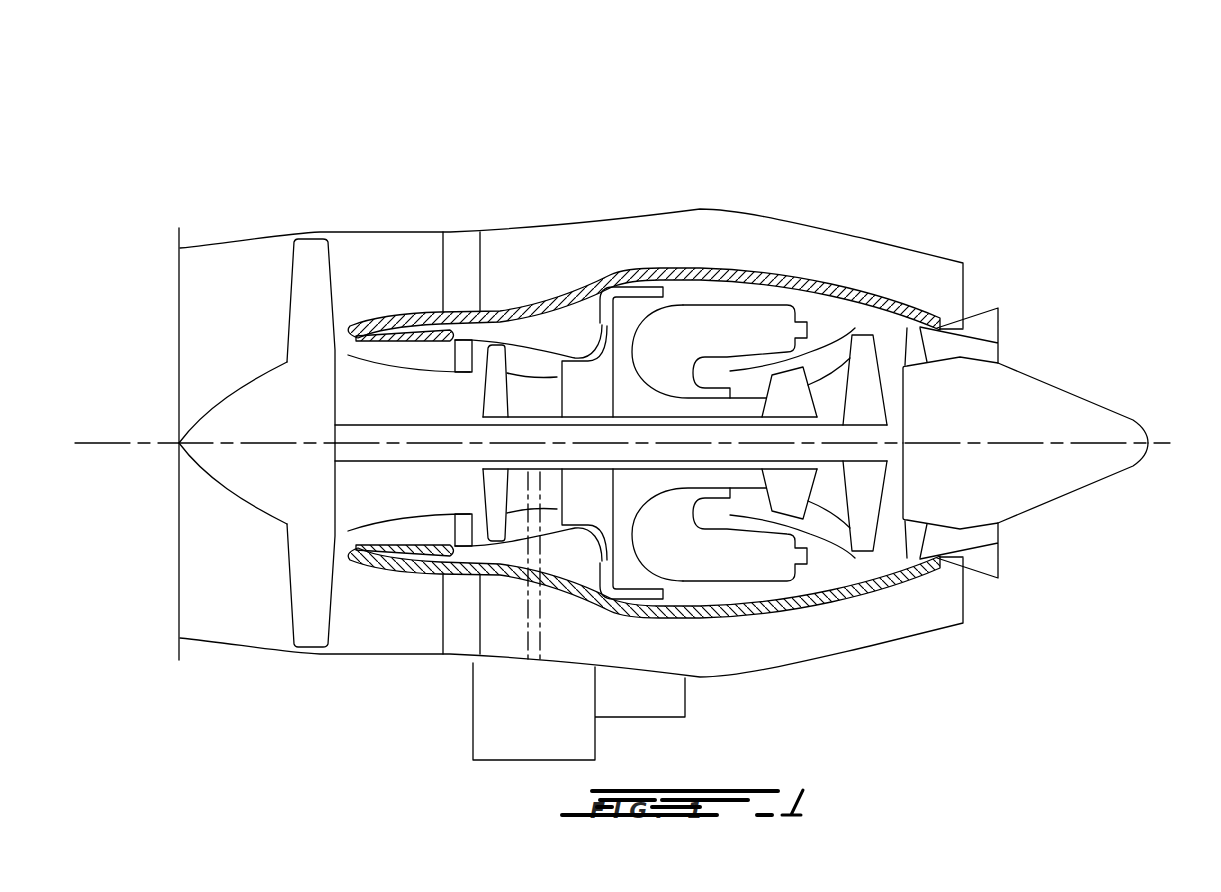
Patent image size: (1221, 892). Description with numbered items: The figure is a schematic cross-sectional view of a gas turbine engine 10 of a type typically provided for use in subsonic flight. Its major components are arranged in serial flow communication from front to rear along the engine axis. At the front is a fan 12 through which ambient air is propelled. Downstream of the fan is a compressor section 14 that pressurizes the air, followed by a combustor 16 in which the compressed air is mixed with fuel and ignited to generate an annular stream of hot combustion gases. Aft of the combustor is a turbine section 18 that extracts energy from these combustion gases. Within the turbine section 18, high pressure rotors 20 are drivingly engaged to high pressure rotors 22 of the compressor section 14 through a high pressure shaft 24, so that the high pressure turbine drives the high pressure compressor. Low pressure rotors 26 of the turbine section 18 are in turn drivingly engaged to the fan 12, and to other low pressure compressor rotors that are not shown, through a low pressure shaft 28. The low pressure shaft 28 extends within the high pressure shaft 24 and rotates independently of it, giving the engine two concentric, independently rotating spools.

The gas turbine engine 10 is at (843, 157).
The fan 12 is at (305, 575).
The compressor section 14 is at (527, 357).
The combustor 16 is at (715, 323).
The turbine section 18 is at (828, 502).
The high pressure rotor 20 is at (802, 383).
The high pressure rotor 22 is at (588, 378).
The high pressure shaft 24 is at (717, 423).
The low pressure rotor 26 is at (867, 382).
The low pressure shaft 28 is at (390, 463).